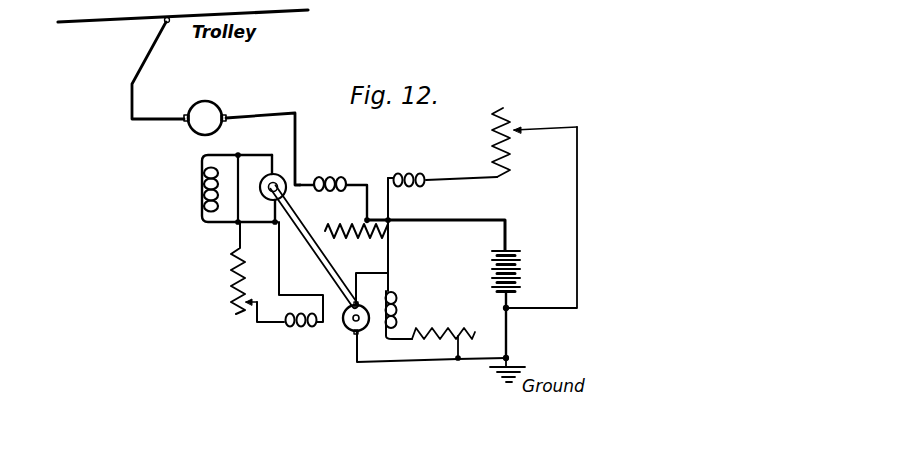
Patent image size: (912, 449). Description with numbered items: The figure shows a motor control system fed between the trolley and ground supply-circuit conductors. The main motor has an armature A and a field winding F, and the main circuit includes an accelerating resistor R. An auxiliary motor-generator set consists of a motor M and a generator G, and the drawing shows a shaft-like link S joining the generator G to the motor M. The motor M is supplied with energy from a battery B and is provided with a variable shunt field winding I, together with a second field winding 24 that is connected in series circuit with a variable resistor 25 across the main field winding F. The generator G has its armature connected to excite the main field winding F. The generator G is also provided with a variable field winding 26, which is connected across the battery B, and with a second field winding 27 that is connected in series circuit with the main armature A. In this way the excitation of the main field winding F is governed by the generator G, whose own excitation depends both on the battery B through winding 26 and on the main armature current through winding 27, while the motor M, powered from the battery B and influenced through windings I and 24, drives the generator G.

The main motor armature A is at (205, 118).
The main field winding F is at (196, 198).
The generator G is at (275, 179).
The switch arm S is at (297, 210).
The second field winding 27 is at (334, 189).
The variable field winding 26 is at (442, 170).
The main circuit accelerating resistor R is at (372, 238).
The variable resistor 25 is at (230, 279).
The second field winding 24 is at (308, 327).
The motor M is at (359, 310).
The variable shunt field winding I is at (395, 305).
The battery B is at (493, 278).